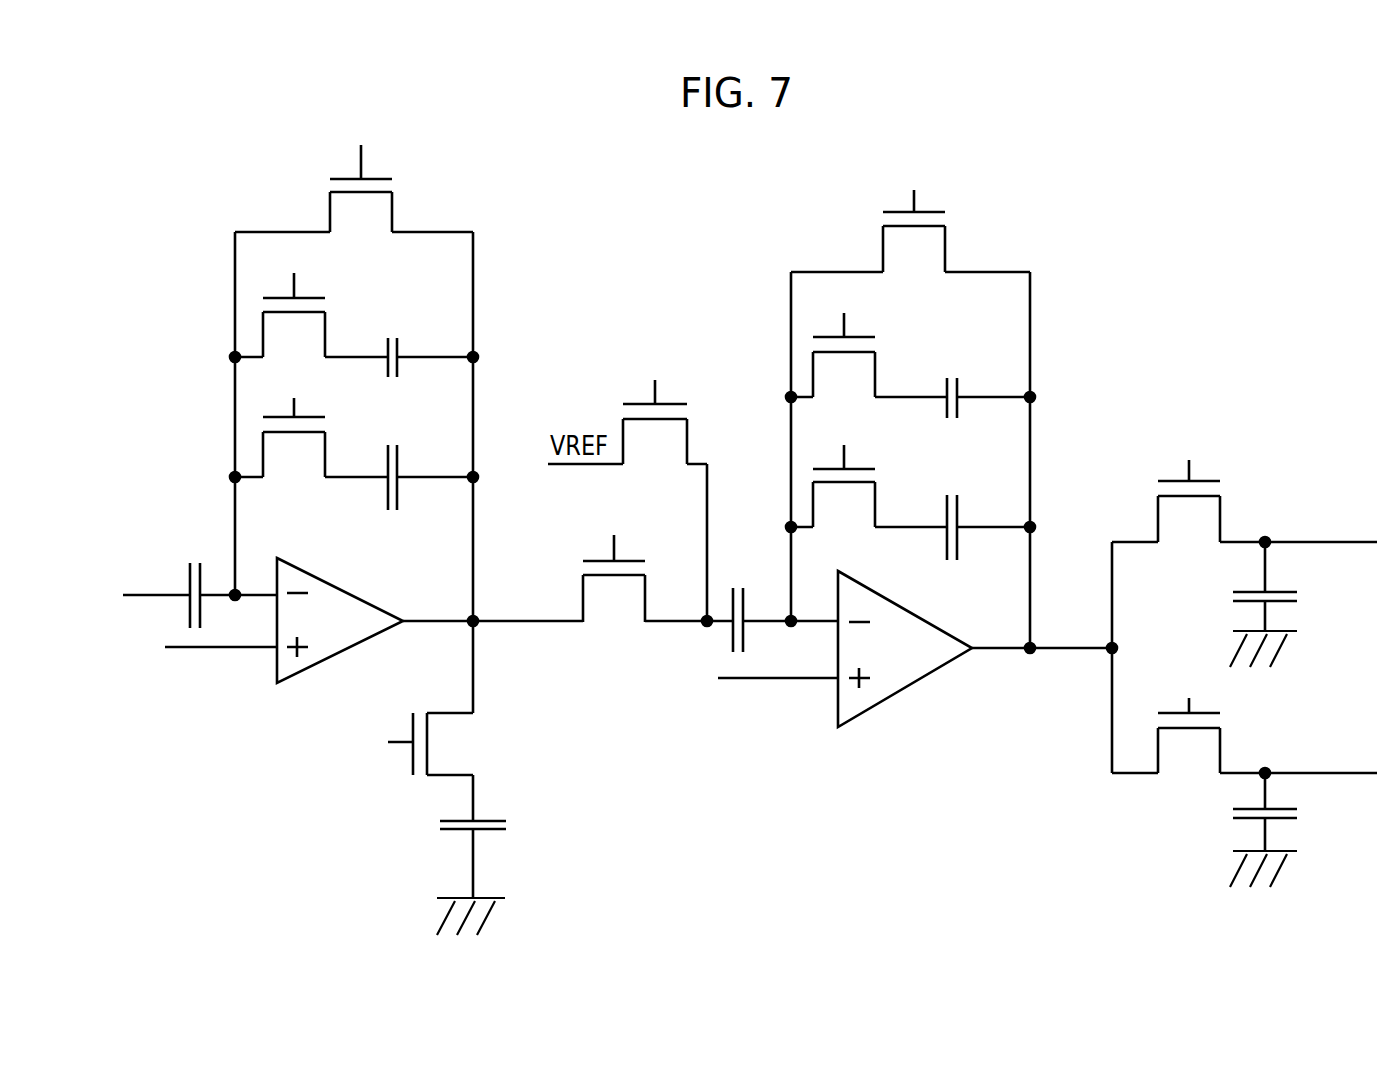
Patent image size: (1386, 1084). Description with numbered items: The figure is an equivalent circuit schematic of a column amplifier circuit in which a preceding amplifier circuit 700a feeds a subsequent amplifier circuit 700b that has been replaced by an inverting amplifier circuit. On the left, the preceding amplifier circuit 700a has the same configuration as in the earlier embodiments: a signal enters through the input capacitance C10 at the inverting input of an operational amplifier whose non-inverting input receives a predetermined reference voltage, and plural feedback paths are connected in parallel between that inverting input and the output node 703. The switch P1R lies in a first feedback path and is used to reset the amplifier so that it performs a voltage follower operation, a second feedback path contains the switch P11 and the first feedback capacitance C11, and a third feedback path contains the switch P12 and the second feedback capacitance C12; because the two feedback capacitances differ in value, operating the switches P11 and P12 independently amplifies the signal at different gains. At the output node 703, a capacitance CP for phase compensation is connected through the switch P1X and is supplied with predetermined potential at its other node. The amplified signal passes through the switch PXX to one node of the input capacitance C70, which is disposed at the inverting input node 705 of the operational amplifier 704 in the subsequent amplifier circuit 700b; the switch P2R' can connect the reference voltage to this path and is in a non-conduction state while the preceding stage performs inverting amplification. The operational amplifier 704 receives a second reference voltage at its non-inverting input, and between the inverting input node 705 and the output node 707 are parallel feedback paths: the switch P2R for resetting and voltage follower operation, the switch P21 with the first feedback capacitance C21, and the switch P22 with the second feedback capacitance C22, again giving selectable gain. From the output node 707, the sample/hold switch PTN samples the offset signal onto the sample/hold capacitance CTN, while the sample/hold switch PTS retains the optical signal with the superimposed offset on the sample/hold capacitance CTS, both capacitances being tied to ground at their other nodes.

The preceding amplifier circuit 700a is at (221, 198).
The subsequent amplifier circuit 700b is at (1017, 232).
The output node of the preceding amplifier circuit 703 is at (476, 625).
The operational amplifier 704 is at (908, 691).
The inverting input node 705 is at (791, 627).
The output node of the operational amplifier 707 is at (1030, 653).
The switch P1R is at (361, 175).
The switch P12 is at (294, 300).
The switch P11 is at (294, 420).
The second feedback capacitance C12 is at (394, 374).
The first feedback capacitance C11 is at (394, 494).
The input capacitance C10 is at (196, 580).
The switch P1X is at (406, 744).
The capacitance for phase compensation CP is at (493, 829).
The switch PXX is at (614, 564).
The switch P2R' is at (655, 407).
The input capacitance C70 is at (742, 604).
The switch P2R is at (914, 216).
The switch P22 is at (844, 340).
The switch P21 is at (844, 472).
The second feedback capacitance C22 is at (952, 415).
The first feedback capacitance C21 is at (952, 545).
The sample/hold switch PTS is at (1189, 485).
The sample/hold switch PTN is at (1189, 722).
The sample/hold capacitance CTS is at (1290, 586).
The sample/hold capacitance CTN is at (1293, 812).